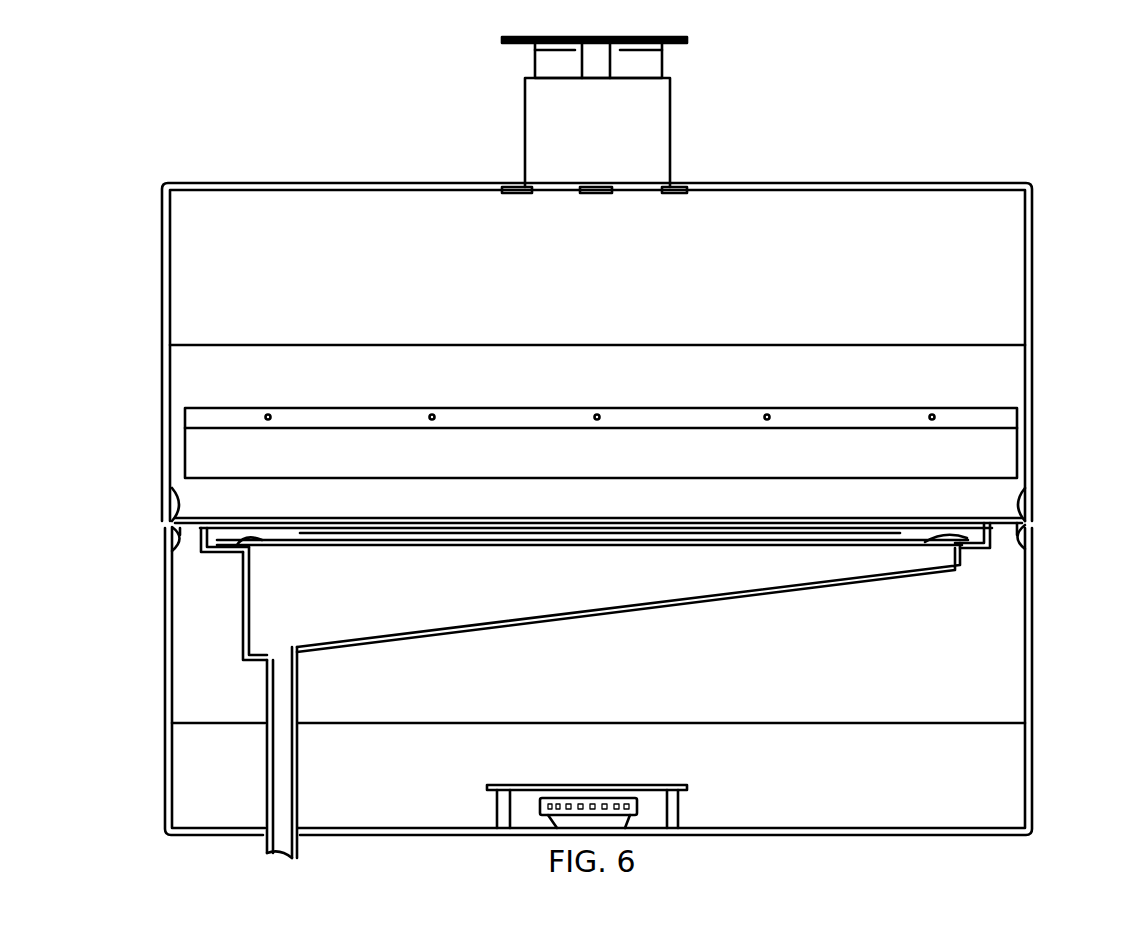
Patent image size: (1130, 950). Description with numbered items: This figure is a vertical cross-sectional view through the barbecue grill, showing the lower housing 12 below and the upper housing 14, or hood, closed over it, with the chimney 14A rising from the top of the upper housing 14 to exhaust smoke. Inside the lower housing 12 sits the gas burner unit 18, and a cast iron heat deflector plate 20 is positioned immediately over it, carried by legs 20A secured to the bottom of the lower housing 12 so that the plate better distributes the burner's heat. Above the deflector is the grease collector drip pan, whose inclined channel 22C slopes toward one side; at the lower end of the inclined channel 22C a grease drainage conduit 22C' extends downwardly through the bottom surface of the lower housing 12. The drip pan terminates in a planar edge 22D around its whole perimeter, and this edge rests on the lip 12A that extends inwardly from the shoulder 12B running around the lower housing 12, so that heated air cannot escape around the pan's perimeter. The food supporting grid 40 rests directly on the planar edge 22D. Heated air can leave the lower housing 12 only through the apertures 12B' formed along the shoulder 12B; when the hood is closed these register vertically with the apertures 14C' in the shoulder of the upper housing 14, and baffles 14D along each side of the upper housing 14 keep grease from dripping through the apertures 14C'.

The lower housing 12 is at (162, 712).
The lip 12A is at (201, 530).
The shoulder 12B is at (559, 566).
The apertures 12B' is at (602, 550).
The upper housing 14 is at (162, 268).
The chimney 14A is at (525, 113).
The apertures 14C' is at (602, 496).
The baffles 14D is at (565, 464).
The gas burner unit 18 is at (540, 808).
The heat deflector plate 20 is at (637, 785).
The legs 20A is at (680, 815).
The inclined channel 22C is at (601, 604).
The grease drainage conduit 22C' is at (321, 752).
The planar edge 22D is at (250, 540).
The food supporting grid 40 is at (362, 525).